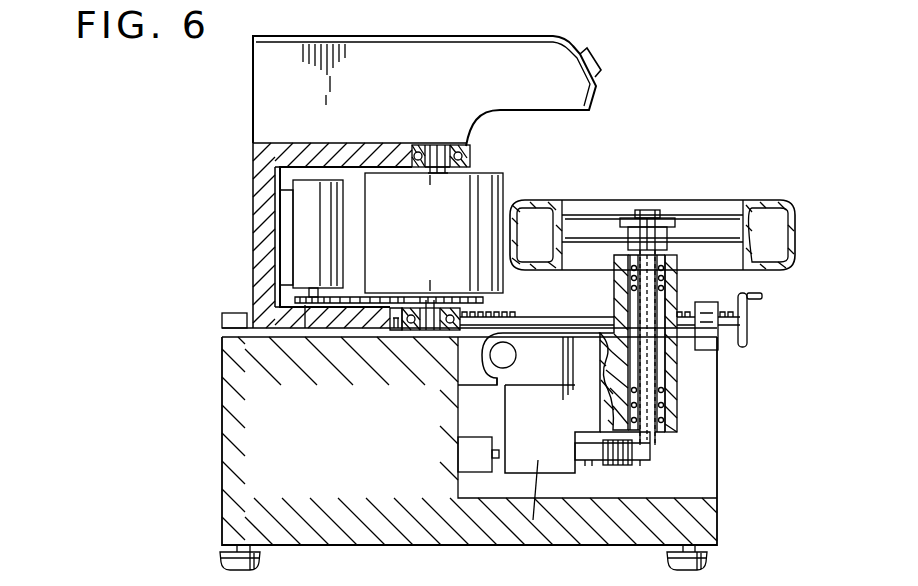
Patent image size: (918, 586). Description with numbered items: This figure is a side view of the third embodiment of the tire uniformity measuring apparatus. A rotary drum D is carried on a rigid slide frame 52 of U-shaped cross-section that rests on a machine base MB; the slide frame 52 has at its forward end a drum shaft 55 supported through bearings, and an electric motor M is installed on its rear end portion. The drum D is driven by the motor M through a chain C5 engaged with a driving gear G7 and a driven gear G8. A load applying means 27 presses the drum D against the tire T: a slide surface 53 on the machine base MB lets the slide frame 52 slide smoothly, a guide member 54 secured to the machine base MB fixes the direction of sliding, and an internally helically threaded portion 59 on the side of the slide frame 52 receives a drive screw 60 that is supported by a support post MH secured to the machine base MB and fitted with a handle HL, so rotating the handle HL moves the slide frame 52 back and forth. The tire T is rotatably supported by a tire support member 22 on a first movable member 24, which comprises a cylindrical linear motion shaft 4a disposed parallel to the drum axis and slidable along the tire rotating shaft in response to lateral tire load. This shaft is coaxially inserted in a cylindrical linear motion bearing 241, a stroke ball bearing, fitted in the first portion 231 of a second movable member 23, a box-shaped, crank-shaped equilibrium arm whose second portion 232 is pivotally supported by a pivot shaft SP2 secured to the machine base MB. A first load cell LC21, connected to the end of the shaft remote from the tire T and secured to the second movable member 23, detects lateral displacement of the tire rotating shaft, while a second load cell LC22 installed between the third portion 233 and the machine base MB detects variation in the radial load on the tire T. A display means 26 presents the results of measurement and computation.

The display means 26 is at (575, 30).
The slide frame 52 is at (258, 215).
The drum shaft 55 is at (430, 130).
The electric motor M is at (318, 249).
The rotary drum D is at (418, 249).
The driven gear G8 is at (408, 296).
The driving gear G7 is at (305, 330).
The chain C5 is at (392, 318).
The internally helically threaded portion 59 is at (410, 330).
The slide surface 53 is at (232, 332).
The guide member 54 is at (233, 313).
The machine base MB is at (337, 522).
The second movable member 23 is at (555, 400).
The pivot shaft SP2 is at (496, 355).
The second portion 232 is at (513, 400).
The third portion 233 is at (533, 520).
The second load cell LC22 is at (472, 455).
The first load cell LC21 is at (605, 465).
The cylindrical linear motion shaft 4a is at (657, 443).
The first movable member 24 is at (647, 373).
The first portion 231 is at (672, 400).
The cylindrical linear motion bearing 241 is at (673, 417).
The load applying means 27 is at (557, 322).
The drive screw 60 is at (523, 316).
The support post MH is at (702, 302).
The handle HL is at (752, 314).
The tire T is at (779, 200).
The tire support member 22 is at (645, 210).